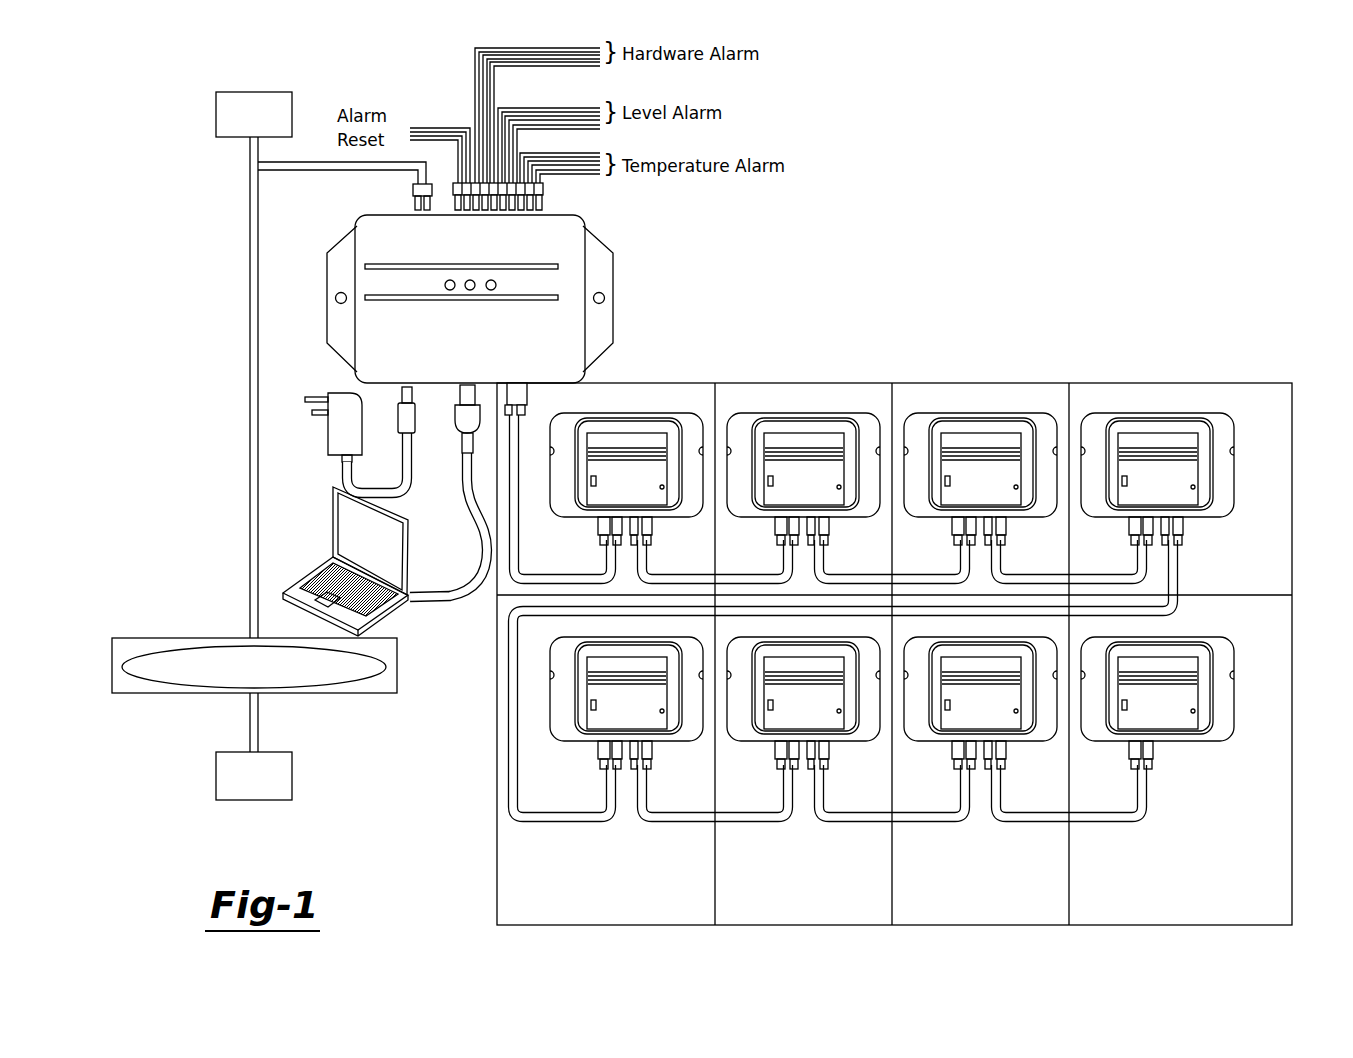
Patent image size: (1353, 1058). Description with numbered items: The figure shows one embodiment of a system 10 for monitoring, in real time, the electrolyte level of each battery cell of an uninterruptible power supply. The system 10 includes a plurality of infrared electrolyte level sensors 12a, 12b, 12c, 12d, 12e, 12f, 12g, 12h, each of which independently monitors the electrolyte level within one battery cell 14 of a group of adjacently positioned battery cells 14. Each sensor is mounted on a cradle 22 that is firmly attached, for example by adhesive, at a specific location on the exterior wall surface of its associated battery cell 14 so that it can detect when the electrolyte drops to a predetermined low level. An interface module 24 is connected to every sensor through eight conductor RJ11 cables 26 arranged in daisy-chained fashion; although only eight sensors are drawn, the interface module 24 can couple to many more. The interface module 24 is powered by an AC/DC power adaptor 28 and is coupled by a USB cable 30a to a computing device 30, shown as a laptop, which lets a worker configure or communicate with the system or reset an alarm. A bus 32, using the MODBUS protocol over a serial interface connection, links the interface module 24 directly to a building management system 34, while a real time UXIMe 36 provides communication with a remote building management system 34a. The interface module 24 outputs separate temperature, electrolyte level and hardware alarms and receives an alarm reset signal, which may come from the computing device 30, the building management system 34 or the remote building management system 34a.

The system 10 is at (936, 206).
The infrared electrolyte level sensor 12a is at (630, 414).
The infrared electrolyte level sensor 12b is at (807, 414).
The infrared electrolyte level sensor 12c is at (984, 414).
The infrared electrolyte level sensor 12d is at (1157, 414).
The infrared electrolyte level sensor 12e is at (625, 720).
The infrared electrolyte level sensor 12f is at (800, 720).
The infrared electrolyte level sensor 12g is at (975, 720).
The infrared electrolyte level sensor 12h is at (1155, 720).
The battery cell 14 is at (660, 395).
The cradle 22 is at (688, 432).
The interface module 24 is at (617, 269).
The eight conductor RJ11 cable 26 is at (540, 578).
The AC/DC power adaptor 28 is at (328, 420).
The computing device 30 is at (312, 585).
The USB cable 30a is at (460, 598).
The bus 32 is at (296, 172).
The building management system 34 is at (216, 114).
The remote building management system 34a is at (216, 776).
The UXIMe 36 is at (228, 638).